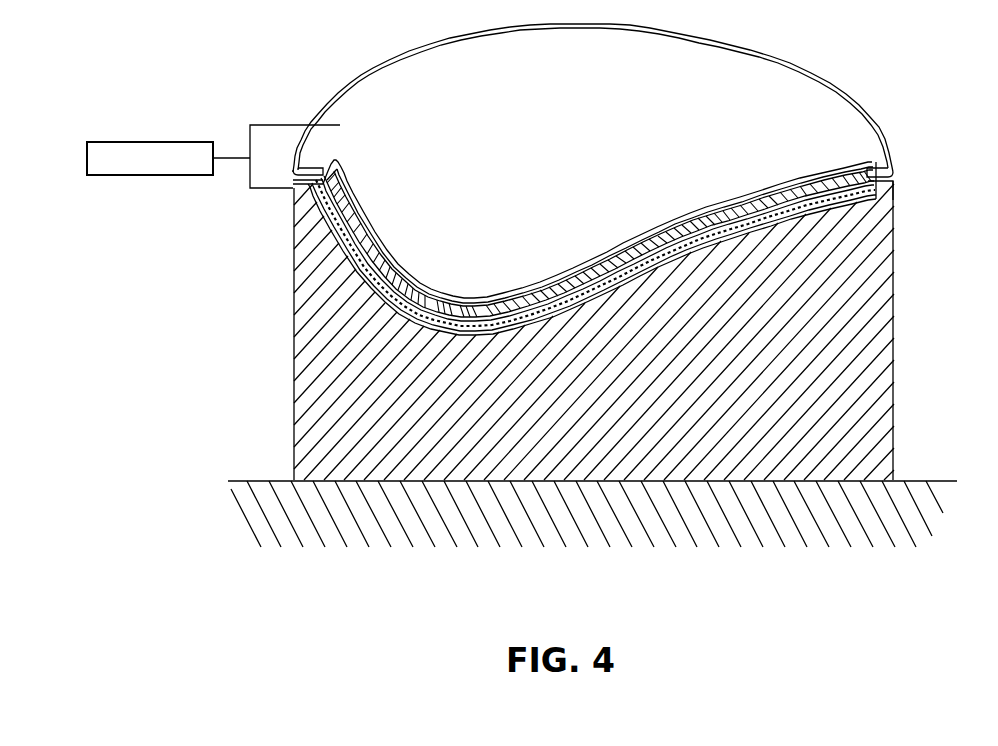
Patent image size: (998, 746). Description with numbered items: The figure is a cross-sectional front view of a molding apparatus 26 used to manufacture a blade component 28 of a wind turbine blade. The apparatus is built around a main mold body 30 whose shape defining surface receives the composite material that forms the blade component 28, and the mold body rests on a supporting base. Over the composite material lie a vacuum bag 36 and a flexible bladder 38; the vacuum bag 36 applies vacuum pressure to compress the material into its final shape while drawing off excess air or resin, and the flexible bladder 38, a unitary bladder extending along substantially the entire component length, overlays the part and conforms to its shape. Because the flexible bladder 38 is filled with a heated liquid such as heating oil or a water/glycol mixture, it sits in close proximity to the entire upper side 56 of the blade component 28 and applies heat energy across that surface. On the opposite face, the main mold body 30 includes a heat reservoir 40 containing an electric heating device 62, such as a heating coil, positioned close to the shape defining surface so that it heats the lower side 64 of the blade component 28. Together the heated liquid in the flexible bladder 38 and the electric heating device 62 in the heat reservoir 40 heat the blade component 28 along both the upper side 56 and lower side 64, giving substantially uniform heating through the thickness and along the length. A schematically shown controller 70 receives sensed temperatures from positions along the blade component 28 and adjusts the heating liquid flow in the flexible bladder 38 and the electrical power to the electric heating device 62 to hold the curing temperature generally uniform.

The molding apparatus 26 is at (571, 104).
The blade component 28 is at (370, 238).
The main mold body 30 is at (293, 386).
The vacuum bag 36 is at (774, 182).
The flexible bladder 38 is at (348, 83).
The heat reservoir 40 is at (886, 197).
The upper side 56 is at (478, 303).
The electric heating device 62 is at (878, 186).
The lower side 64 is at (560, 297).
The controller 70 is at (130, 141).